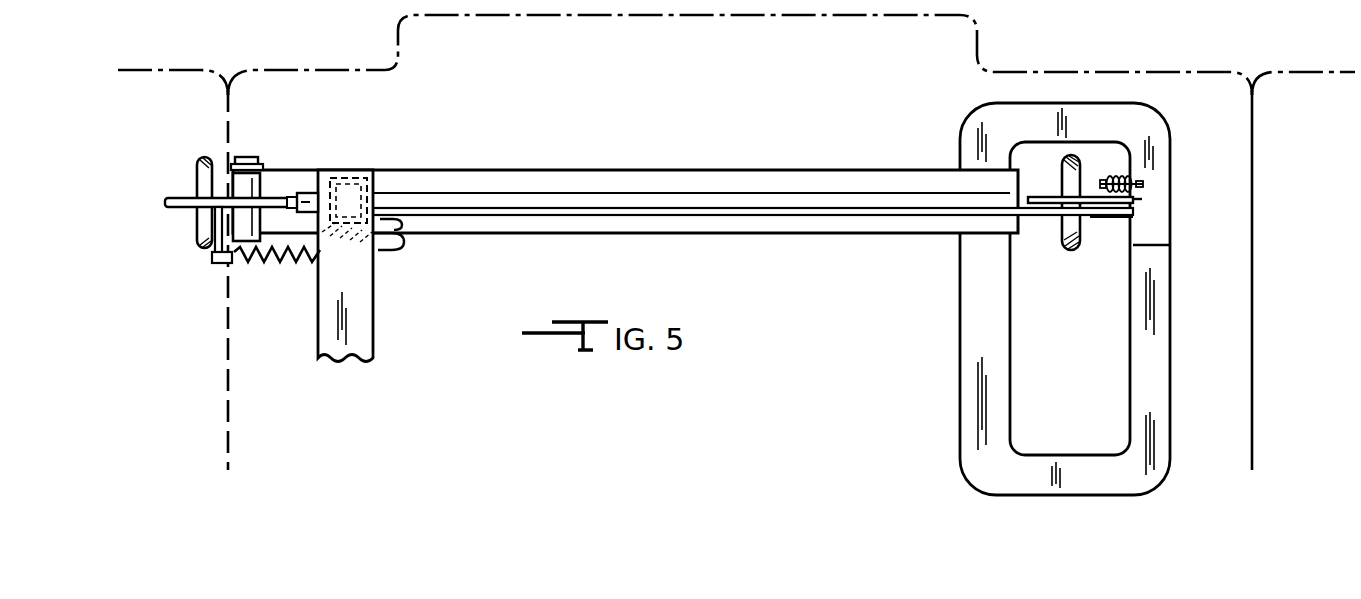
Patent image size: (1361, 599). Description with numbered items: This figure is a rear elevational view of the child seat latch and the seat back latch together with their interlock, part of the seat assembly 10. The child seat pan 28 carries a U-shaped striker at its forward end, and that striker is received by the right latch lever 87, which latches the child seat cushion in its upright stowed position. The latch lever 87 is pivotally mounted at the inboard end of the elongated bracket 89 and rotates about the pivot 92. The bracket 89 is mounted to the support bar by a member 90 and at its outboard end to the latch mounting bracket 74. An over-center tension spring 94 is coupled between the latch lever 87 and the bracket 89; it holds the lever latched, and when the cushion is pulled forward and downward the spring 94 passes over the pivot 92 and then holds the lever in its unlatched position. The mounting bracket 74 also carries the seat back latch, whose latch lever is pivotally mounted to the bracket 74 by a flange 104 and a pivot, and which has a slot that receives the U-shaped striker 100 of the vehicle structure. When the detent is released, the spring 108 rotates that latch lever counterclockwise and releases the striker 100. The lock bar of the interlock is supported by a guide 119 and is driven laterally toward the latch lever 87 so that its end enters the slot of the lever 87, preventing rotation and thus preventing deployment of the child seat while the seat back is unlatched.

The door 10 is at (418, 15).
The child seat pan 28 is at (173, 60).
The latch mounting bracket 74 is at (1150, 330).
The right latch lever 87 is at (177, 188).
The elongated bracket 89 is at (440, 168).
The member 90 is at (373, 282).
The pivot 92 is at (253, 157).
The over-center tension spring 94 is at (270, 265).
The U-shaped striker 100 is at (1060, 175).
The flange 104 is at (1152, 200).
The spring 108 is at (1122, 180).
The guide 119 is at (348, 165).